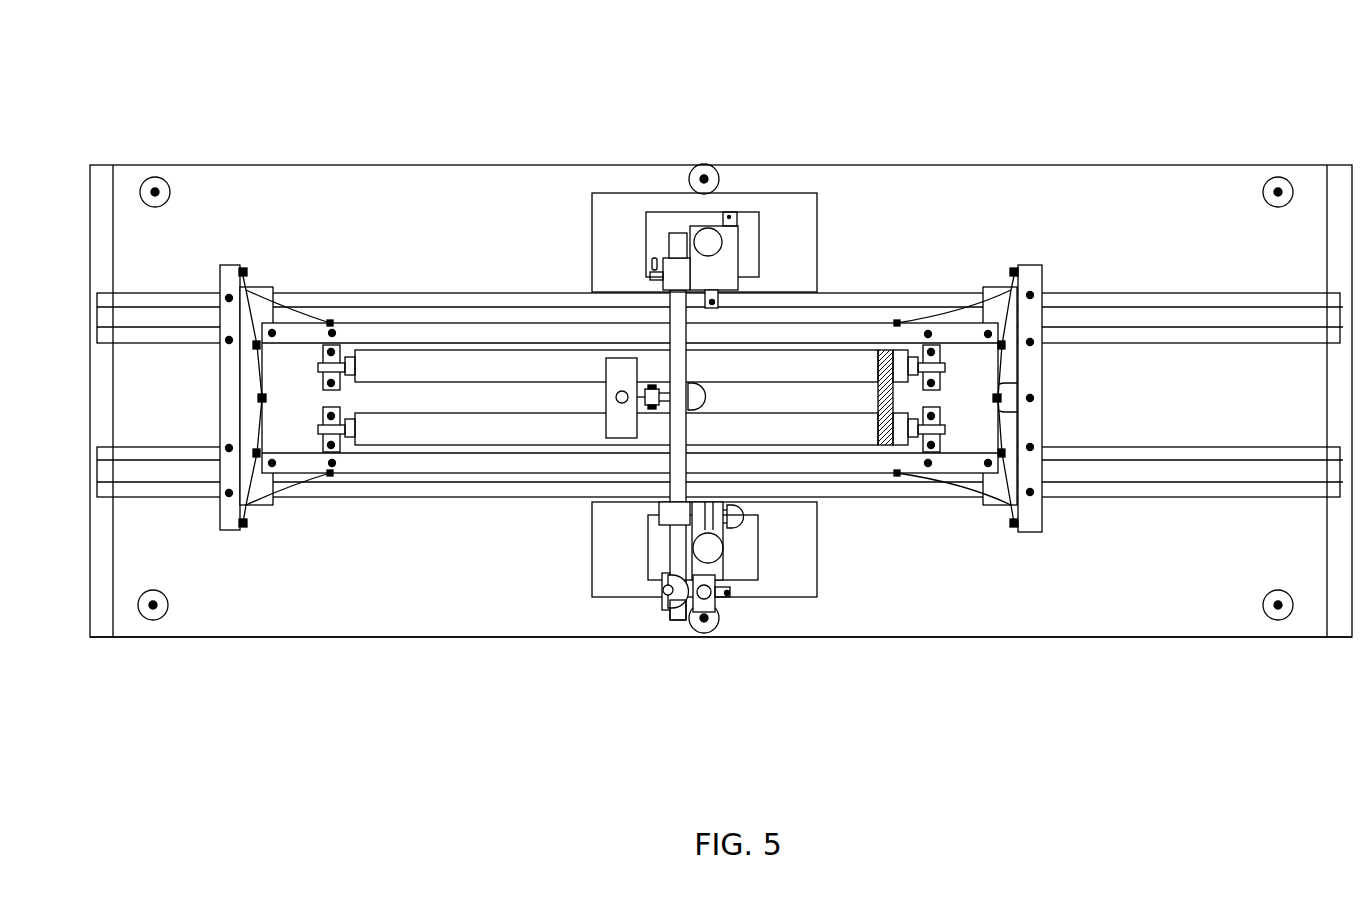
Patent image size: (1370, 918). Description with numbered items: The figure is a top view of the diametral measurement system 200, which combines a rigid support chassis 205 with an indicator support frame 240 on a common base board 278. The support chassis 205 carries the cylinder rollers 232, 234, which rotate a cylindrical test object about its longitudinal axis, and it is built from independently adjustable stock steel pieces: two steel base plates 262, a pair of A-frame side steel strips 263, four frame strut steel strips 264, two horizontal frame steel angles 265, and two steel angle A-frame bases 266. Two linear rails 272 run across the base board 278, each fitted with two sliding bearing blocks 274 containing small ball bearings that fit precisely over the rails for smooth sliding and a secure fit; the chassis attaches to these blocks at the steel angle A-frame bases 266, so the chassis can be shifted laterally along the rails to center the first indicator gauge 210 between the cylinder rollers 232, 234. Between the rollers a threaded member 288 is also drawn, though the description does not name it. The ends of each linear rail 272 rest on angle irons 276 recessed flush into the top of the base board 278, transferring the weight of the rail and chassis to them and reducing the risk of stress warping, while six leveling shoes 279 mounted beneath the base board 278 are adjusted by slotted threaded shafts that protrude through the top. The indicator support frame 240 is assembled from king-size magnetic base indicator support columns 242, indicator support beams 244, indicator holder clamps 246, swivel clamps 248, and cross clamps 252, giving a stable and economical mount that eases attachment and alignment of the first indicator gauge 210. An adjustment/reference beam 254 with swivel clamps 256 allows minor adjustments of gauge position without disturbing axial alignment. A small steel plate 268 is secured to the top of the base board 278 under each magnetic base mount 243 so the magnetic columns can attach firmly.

The diametral measurement system 200 is at (1197, 55).
The support chassis 205 is at (1076, 252).
The first indicator gauge 210 is at (620, 420).
The cylinder roller 232 is at (545, 368).
The cylinder roller 234 is at (440, 430).
The indicator support frame 240 is at (677, 642).
The magnetic base indicator support column 242 is at (708, 243).
The magnetic base mount 243 is at (748, 237).
The indicator support beam 244 is at (680, 455).
The indicator holder clamp 246 is at (705, 395).
The swivel clamp 248 is at (680, 268).
The cross clamp 252 is at (715, 530).
The adjustment/reference beam 254 is at (706, 592).
The swivel clamp 256 is at (663, 598).
The steel base plate 262 is at (295, 420).
The A-frame side steel strip 263 is at (245, 295).
The frame strut steel strip 264 is at (330, 325).
The horizontal frame steel angle 265 is at (878, 347).
The steel angle A-frame base 266 is at (230, 390).
The small steel plate 268 is at (790, 257).
The linear rail 272 is at (1215, 338).
The sliding bearing block 274 is at (1010, 333).
The angle iron 276 is at (105, 570).
The base board 278 is at (400, 607).
The leveling shoe 279 is at (160, 612).
The threaded rod 288 is at (887, 345).